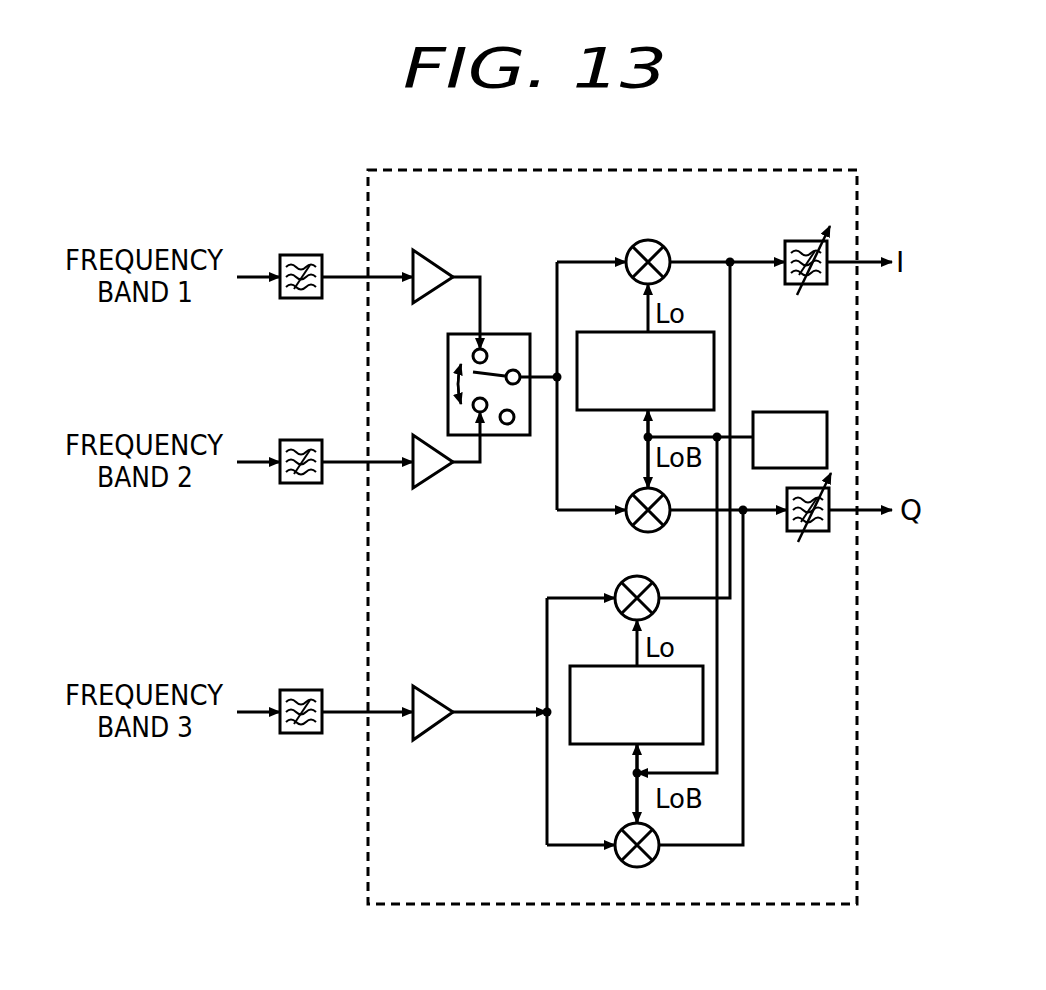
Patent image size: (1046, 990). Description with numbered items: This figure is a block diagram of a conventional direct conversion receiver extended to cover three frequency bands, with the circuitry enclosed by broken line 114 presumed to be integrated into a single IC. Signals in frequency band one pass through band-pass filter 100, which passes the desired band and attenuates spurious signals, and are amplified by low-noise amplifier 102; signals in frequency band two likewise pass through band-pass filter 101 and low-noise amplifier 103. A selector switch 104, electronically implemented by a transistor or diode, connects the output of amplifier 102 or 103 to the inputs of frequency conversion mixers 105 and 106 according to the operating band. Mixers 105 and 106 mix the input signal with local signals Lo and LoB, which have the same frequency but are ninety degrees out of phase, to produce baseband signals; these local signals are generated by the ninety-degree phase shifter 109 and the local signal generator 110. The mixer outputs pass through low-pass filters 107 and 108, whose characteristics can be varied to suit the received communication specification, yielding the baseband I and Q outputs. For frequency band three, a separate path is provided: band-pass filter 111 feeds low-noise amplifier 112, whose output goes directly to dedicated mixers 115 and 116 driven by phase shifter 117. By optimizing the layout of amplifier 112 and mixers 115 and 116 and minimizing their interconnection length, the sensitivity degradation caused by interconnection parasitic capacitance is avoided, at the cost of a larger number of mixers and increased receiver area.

The band-pass filter 100 is at (304, 255).
The band-pass filter 101 is at (303, 483).
The low-noise amplifier 102 is at (447, 260).
The low-noise amplifier 103 is at (432, 481).
The selector switch 104 is at (492, 332).
The frequency conversion mixer 105 is at (649, 240).
The frequency conversion mixer 106 is at (626, 513).
The low-pass filter 107 is at (808, 241).
The low-pass filter 108 is at (815, 532).
The 90-degree phase shifter 109 is at (605, 412).
The local signal generator 110 is at (795, 412).
The band-pass filter 111 is at (303, 733).
The low-noise amplifier 112 is at (432, 731).
The broken line 114 is at (548, 906).
The frequency conversion mixer 115 is at (620, 589).
The frequency conversion mixer 116 is at (618, 847).
The phase shifter 117 is at (596, 746).